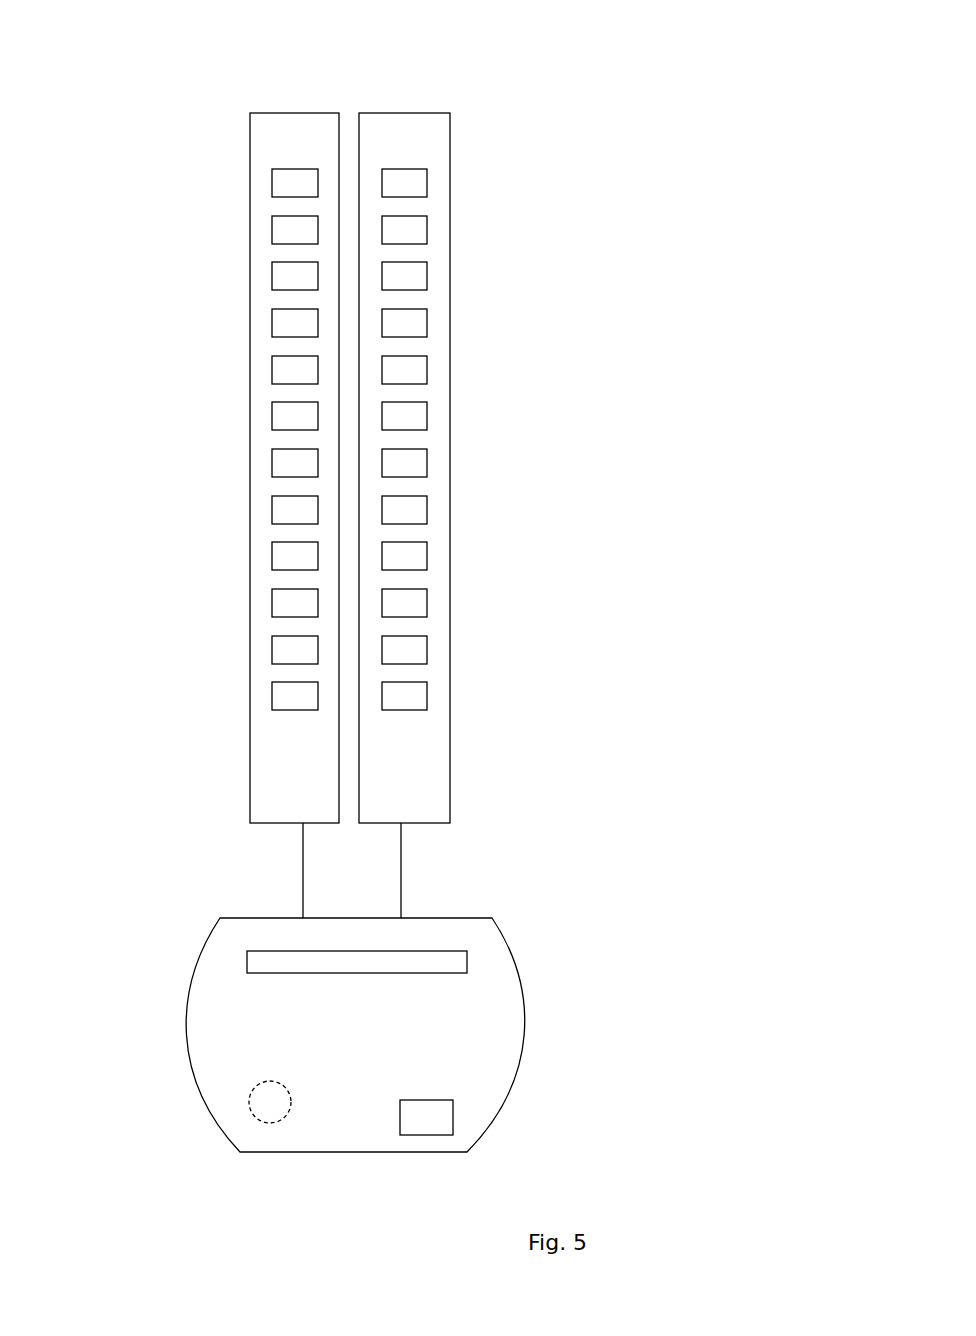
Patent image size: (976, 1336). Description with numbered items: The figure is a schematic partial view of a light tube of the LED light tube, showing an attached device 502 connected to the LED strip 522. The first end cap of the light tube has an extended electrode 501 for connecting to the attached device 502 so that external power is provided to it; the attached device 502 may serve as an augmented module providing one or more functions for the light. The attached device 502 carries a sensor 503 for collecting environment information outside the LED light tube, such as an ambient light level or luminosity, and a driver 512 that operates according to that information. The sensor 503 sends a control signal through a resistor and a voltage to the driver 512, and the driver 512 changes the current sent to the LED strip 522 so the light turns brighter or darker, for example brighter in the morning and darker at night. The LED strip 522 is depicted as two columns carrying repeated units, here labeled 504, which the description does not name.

The extended electrode 501 is at (263, 1125).
The attached device 502 is at (272, 1045).
The sensor 503 is at (435, 970).
The cell / unit 504 is at (413, 185).
The driver 512 is at (438, 1127).
The LED strip 522 is at (417, 757).